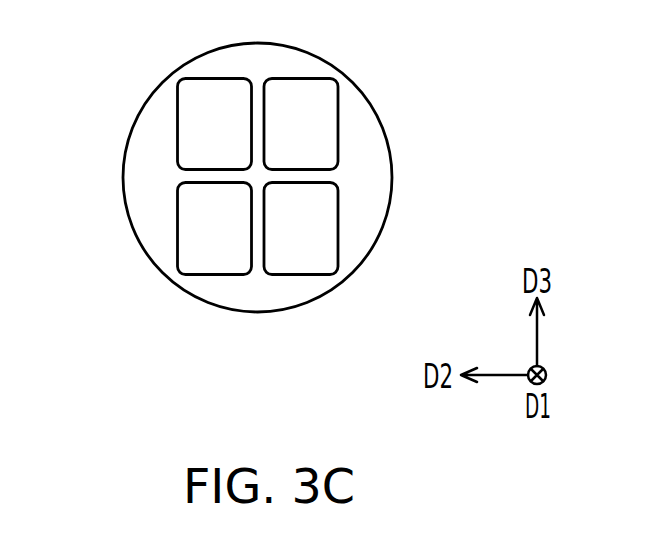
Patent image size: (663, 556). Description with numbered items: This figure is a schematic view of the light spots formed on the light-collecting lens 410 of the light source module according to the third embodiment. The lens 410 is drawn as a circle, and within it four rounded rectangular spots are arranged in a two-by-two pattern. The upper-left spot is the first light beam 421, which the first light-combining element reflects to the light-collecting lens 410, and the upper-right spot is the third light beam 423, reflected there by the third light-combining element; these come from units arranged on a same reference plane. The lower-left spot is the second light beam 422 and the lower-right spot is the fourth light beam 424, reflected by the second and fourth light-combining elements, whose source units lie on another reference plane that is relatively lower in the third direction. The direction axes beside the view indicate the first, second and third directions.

The light-collecting lens 410 is at (322, 55).
The first light beam 421 is at (200, 116).
The second light beam 422 is at (200, 224).
The third light beam 423 is at (315, 115).
The fourth light beam 424 is at (315, 225).